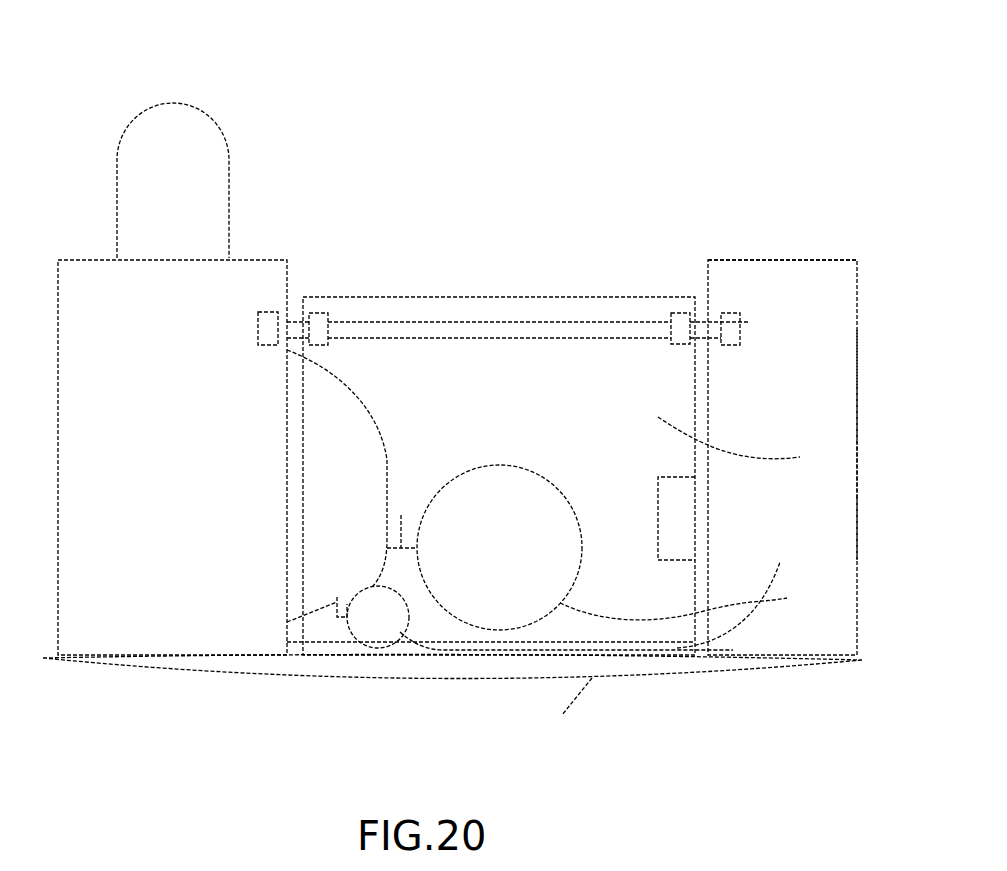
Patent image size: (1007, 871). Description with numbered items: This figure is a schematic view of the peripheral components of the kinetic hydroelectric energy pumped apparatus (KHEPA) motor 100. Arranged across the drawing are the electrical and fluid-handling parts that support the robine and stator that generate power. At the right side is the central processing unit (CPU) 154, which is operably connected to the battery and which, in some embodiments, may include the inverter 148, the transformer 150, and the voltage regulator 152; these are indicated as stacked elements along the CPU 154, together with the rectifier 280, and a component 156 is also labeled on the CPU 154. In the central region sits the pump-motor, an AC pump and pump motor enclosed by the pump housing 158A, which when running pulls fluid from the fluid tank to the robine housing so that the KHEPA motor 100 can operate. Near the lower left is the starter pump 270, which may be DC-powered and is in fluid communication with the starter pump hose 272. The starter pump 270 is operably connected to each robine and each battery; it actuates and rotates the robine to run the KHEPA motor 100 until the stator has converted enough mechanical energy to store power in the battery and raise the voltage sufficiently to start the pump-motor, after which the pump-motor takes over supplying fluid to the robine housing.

The kinetic hydroelectric energy pumped apparatus (KHEPA) motor 100 is at (113, 50).
The central processing unit (CPU) 154 is at (838, 268).
The housing top portion 156 is at (766, 258).
The inverter 148 is at (850, 358).
The transformer 150 is at (850, 414).
The voltage regulator 152 is at (850, 470).
The rectifier 280 is at (850, 527).
The pump housing 158A is at (541, 348).
The starter pump 270 is at (378, 640).
The starter pump hose 272 is at (316, 605).